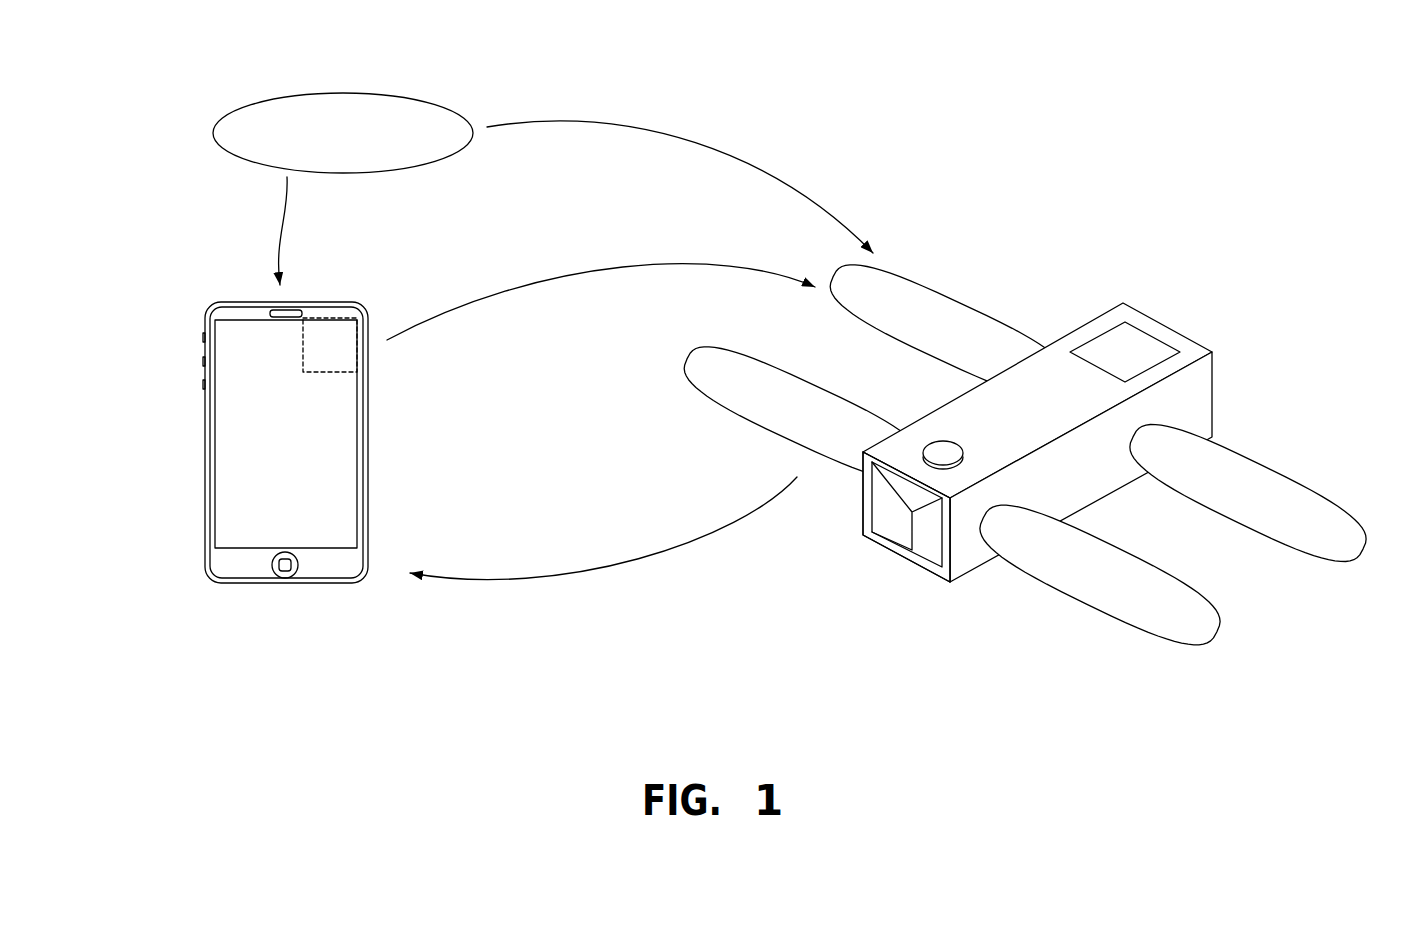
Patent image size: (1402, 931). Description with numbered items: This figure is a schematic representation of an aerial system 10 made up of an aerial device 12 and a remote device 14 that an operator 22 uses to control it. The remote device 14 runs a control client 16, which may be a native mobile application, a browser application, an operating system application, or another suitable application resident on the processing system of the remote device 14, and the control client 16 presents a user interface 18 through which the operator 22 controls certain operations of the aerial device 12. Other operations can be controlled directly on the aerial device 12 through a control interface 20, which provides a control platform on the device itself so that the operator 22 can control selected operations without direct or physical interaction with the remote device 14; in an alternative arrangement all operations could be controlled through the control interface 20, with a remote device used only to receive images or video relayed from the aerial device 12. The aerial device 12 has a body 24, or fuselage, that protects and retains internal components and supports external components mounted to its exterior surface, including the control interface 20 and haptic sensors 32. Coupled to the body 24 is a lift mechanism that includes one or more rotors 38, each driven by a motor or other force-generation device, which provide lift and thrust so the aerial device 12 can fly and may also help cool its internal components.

The aerial system 10 is at (343, 655).
The aerial device 12 is at (1025, 473).
The remote device 14 is at (259, 403).
The control client 16 is at (343, 318).
The user interface 18 is at (250, 512).
The control interface 20 is at (1147, 355).
The operator 22 is at (372, 93).
The body 24 is at (970, 548).
The haptic sensors 32 is at (950, 446).
The rotor 38 is at (955, 322).